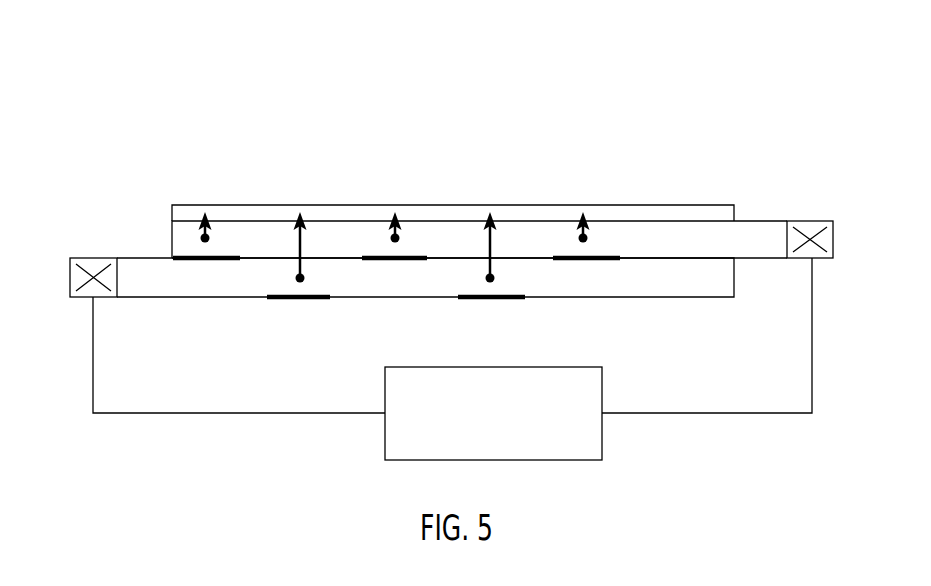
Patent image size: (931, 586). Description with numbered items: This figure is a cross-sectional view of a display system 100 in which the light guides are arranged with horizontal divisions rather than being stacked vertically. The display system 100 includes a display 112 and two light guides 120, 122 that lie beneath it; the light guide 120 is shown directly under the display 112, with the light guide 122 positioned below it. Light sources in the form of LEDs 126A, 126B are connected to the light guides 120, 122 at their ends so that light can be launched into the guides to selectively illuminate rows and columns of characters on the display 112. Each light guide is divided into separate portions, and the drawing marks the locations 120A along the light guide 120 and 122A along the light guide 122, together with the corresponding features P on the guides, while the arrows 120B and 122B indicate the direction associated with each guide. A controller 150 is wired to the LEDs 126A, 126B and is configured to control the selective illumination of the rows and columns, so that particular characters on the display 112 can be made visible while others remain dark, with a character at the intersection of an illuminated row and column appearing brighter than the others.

The display system 100 is at (724, 92).
The display 112 is at (177, 214).
The light guide 120 is at (175, 240).
The first channel actuators / pumping elements 120A is at (208, 216).
The first channel flow direction 120B is at (290, 184).
The light guide 122 is at (128, 287).
The second channel actuators / pumping elements 122A is at (303, 216).
The second channel flow direction 122B is at (225, 312).
The LED 126A is at (812, 220).
The LED 126B is at (68, 283).
The controller 150 is at (505, 436).
The electrode pads P is at (205, 262).